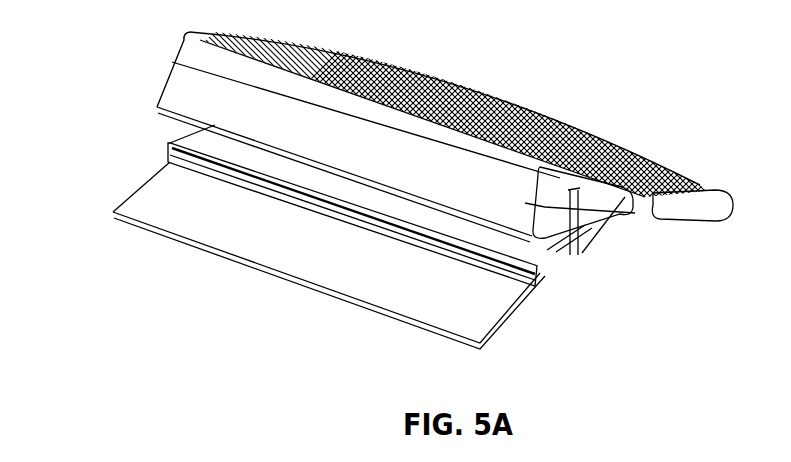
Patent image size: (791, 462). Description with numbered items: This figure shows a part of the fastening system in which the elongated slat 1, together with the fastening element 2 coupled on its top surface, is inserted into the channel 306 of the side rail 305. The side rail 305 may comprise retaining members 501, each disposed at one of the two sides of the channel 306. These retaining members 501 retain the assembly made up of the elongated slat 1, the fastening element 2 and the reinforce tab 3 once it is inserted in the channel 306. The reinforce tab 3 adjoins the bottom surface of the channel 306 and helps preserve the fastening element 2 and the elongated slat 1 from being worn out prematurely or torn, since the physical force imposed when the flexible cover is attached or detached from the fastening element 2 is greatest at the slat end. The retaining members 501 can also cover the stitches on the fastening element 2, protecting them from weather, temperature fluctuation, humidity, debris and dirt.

The side rail 305 is at (192, 72).
The retaining member 501 is at (627, 157).
The fastening element 2 is at (680, 177).
The elongated slat 1 is at (597, 193).
The reinforce tab 3 is at (627, 217).
The channel 306 is at (553, 185).